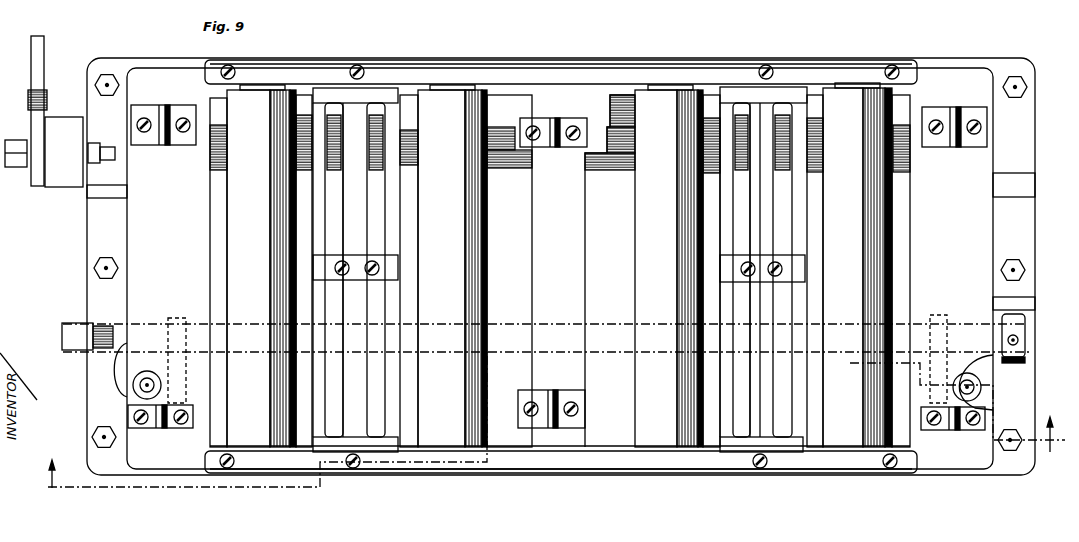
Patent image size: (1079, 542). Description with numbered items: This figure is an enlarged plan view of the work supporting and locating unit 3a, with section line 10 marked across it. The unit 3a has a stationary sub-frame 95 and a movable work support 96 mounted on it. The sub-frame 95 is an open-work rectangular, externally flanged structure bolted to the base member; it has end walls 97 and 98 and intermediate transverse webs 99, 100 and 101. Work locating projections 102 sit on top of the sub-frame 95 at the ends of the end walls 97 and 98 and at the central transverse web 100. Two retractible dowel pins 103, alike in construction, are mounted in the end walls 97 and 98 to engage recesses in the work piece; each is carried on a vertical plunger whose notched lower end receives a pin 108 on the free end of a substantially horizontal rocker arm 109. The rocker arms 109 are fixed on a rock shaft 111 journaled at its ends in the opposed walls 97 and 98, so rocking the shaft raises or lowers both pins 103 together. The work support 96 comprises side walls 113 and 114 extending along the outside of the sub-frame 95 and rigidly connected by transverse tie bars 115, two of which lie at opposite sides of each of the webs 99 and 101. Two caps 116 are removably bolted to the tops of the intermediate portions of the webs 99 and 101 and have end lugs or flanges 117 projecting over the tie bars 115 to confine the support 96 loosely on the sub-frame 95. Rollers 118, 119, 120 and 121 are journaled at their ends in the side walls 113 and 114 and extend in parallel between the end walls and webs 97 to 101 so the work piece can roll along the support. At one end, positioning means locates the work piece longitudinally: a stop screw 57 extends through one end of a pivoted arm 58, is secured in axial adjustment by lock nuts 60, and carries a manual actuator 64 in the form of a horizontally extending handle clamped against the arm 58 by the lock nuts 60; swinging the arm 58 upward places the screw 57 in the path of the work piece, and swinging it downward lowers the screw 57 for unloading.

The work supporting and locating unit 3a is at (1004, 70).
The section line 10- 10 is at (550, 420).
The stop screw 57 is at (106, 148).
The arm 58 is at (69, 126).
The lock nuts 60 is at (15, 165).
The manual actuator 64 is at (44, 72).
The sub-frame 95 is at (520, 163).
The work support 96 is at (598, 72).
The end wall 97 is at (136, 236).
The end wall 98 is at (985, 238).
The transverse web 99 is at (360, 292).
The central transverse web 100 is at (576, 243).
The transverse web 101 is at (758, 150).
The work locating projections 102 is at (166, 108).
The retractible dowel pins 103 is at (155, 383).
The pin 108 is at (147, 368).
The rocker arm 109 is at (185, 380).
The rock shaft 111 is at (617, 334).
The side wall 113 is at (535, 70).
The side wall 114 is at (588, 470).
The transverse tie bars 115 is at (322, 133).
The caps 116 is at (352, 262).
The end lugs or flanges 117 is at (398, 271).
The roller 118 is at (228, 203).
The roller 119 is at (484, 311).
The roller 120 is at (642, 217).
The roller 121 is at (893, 263).